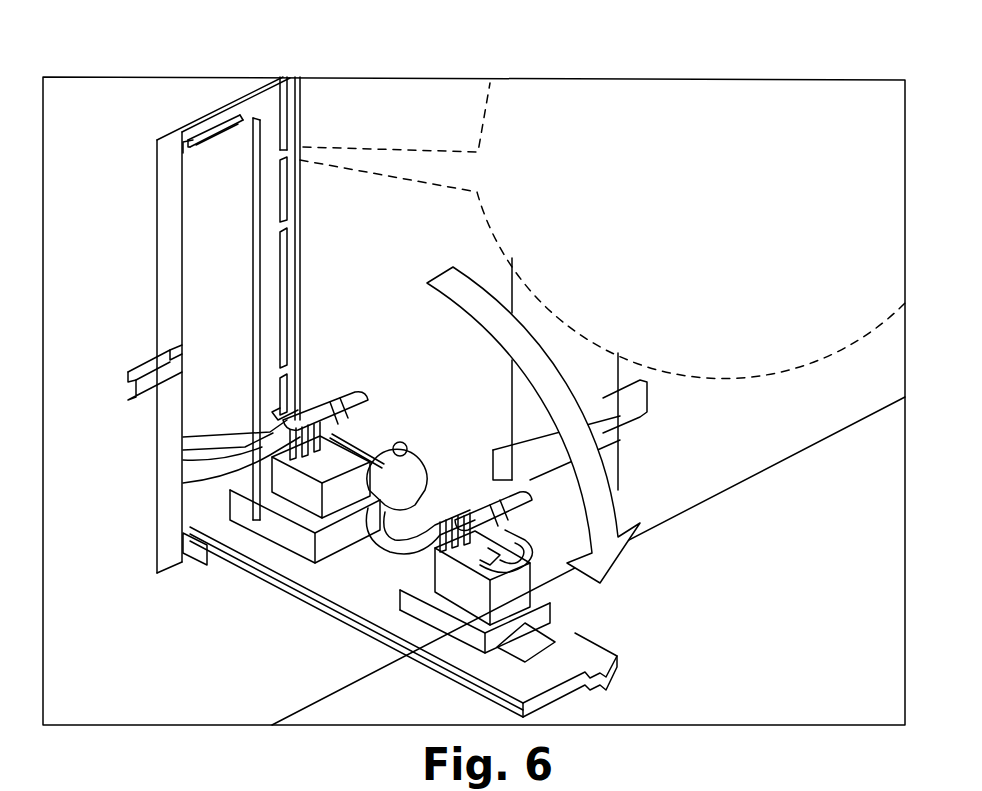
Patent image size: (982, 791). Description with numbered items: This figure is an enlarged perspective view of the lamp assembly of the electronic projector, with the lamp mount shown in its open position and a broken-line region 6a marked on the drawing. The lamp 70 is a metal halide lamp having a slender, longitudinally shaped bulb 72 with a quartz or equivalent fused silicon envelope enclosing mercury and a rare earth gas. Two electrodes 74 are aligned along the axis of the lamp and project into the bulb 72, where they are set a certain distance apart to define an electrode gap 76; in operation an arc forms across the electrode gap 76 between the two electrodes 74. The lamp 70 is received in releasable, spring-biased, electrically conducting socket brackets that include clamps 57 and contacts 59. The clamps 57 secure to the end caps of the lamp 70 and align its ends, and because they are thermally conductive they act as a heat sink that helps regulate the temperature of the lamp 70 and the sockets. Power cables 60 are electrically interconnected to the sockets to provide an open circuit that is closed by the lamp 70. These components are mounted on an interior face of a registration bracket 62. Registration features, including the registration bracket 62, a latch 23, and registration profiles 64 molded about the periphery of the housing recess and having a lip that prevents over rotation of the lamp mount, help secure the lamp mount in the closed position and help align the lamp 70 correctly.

The detail view region 6a is at (400, 148).
The latch 23 is at (226, 122).
The registration profiles 64 is at (260, 265).
The clamps 57 is at (337, 424).
The contacts 59 is at (302, 398).
The power cables 60 is at (193, 477).
The registration bracket 62 is at (580, 640).
The lamp 70 is at (427, 436).
The bulb 72 is at (373, 475).
The electrodes 74 is at (364, 478).
The electrode gap 76 is at (393, 492).